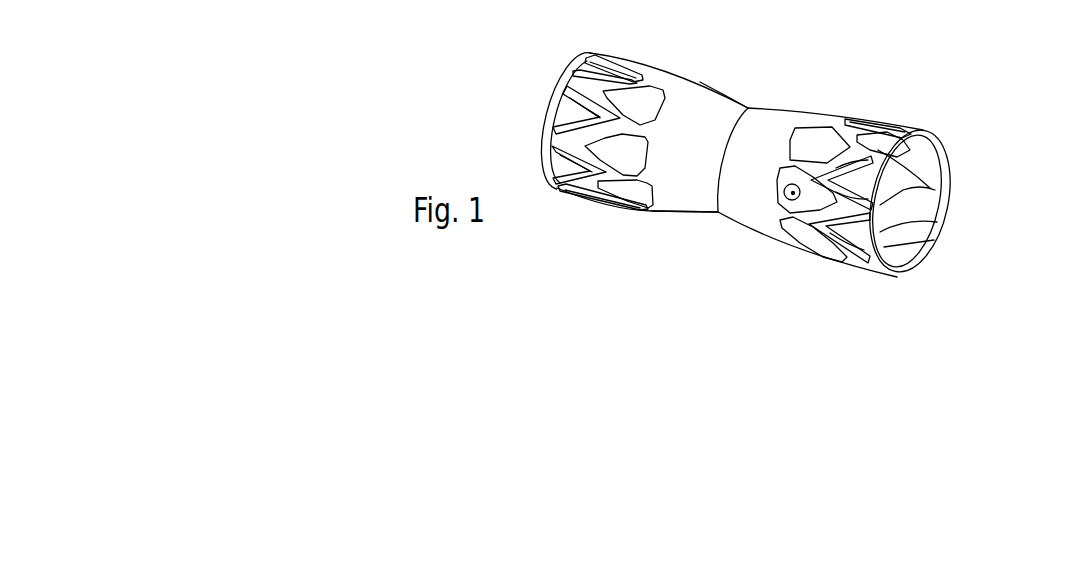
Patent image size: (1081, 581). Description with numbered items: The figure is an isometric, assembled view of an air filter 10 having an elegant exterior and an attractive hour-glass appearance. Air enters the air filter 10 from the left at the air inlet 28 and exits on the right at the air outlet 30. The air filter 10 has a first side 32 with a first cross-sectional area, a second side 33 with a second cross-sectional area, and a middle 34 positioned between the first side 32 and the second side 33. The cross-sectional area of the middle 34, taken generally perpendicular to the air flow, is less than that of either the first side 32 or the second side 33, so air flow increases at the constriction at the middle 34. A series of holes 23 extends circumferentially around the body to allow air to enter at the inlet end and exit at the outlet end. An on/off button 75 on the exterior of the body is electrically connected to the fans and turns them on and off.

The air filter 10 is at (773, 93).
The holes 23 is at (613, 73).
The air inlet 28 is at (543, 97).
The air outlet 30 is at (945, 205).
The first side 32 is at (593, 210).
The second side 33 is at (800, 258).
The middle 34 is at (698, 240).
The on/off button 75 is at (795, 190).